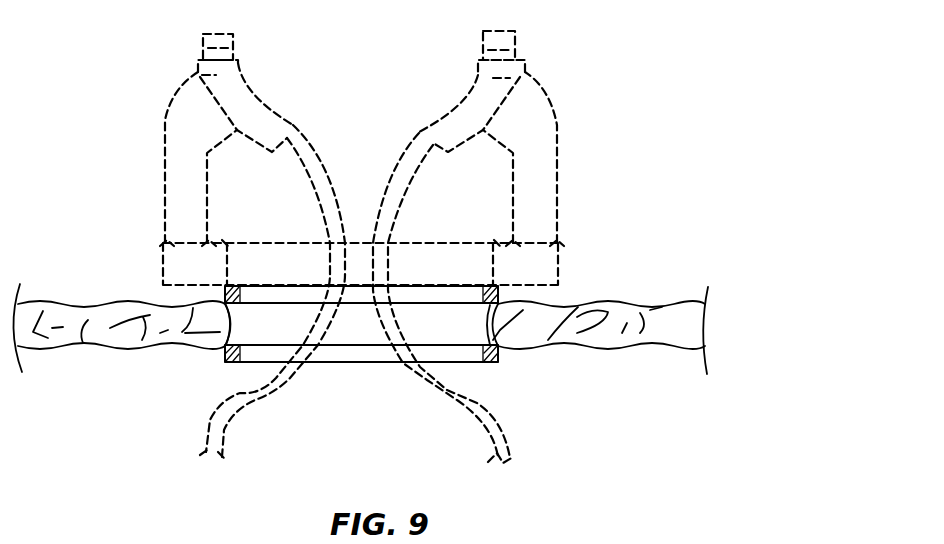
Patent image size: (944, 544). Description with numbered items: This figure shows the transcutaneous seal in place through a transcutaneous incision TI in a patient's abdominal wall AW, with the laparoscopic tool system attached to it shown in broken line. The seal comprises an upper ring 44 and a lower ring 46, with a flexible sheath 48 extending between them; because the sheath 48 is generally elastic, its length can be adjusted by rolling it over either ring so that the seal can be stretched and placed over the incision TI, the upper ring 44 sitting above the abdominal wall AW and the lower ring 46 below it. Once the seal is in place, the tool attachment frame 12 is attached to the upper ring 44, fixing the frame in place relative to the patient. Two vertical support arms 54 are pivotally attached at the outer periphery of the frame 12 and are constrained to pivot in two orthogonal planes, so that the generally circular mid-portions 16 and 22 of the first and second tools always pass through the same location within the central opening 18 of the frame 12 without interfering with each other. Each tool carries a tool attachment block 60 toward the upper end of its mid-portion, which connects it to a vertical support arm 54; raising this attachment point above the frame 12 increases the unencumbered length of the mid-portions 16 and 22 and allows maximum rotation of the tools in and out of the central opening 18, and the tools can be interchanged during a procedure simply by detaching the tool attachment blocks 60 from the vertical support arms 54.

The tool attachment frame 12 is at (408, 240).
The circular mid-portion of first tool 16 is at (302, 168).
The central opening 18 is at (349, 396).
The circular mid-portion of second tool 22 is at (400, 173).
The upper ring 44 is at (483, 300).
The lower ring 46 is at (463, 353).
The flexible sheath 48 is at (227, 343).
The vertical support arm 54 is at (177, 131).
The tool attachment block 60 is at (197, 73).
The abdominal wall AW is at (660, 305).
The transcutaneous incision TI is at (514, 359).